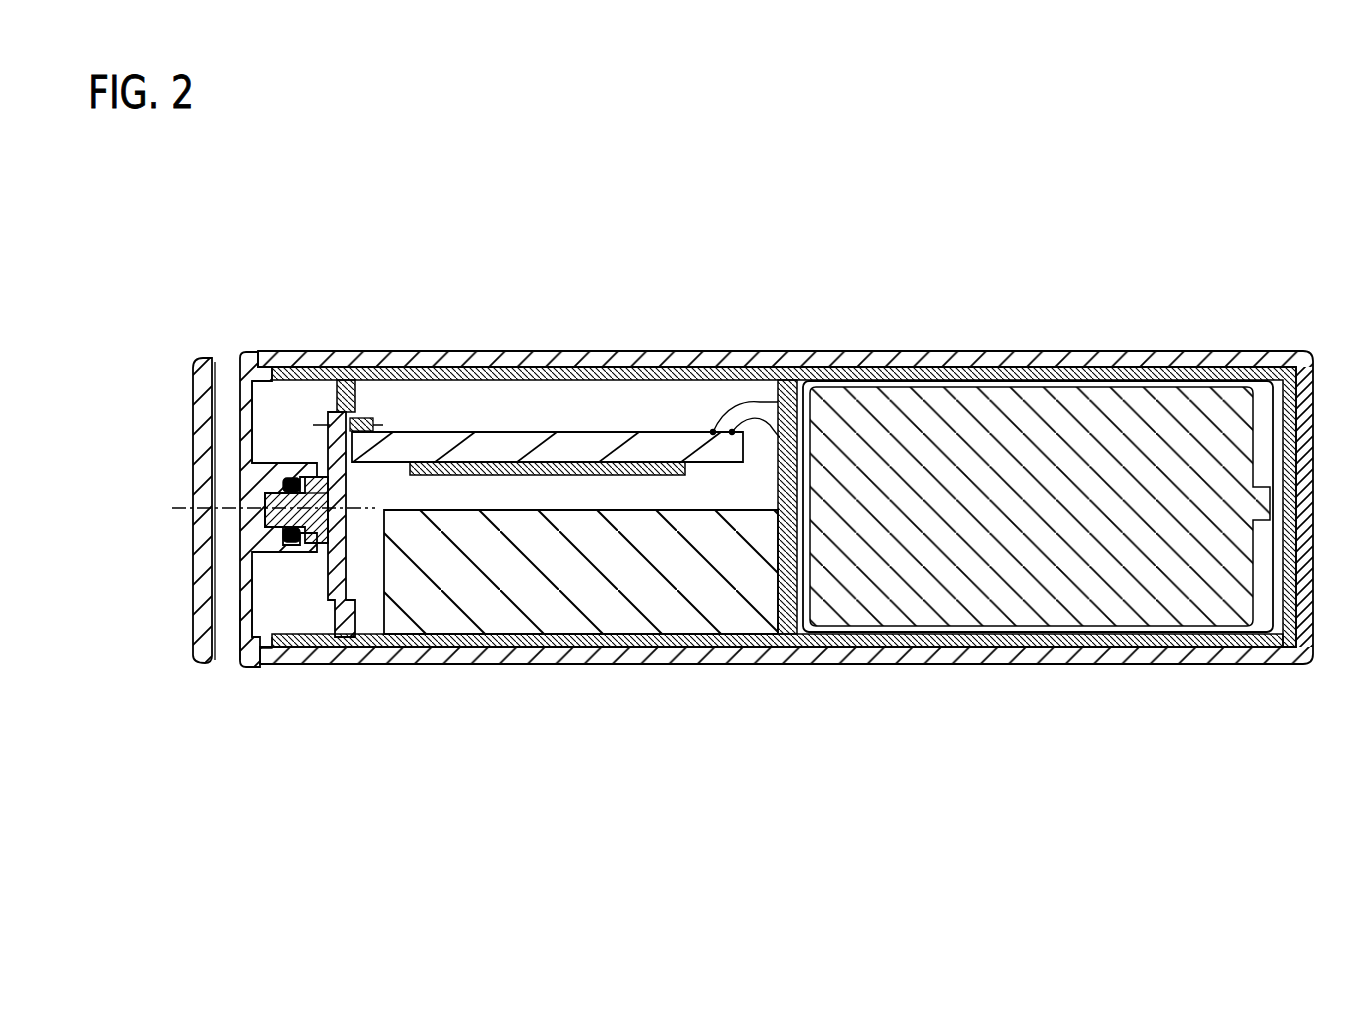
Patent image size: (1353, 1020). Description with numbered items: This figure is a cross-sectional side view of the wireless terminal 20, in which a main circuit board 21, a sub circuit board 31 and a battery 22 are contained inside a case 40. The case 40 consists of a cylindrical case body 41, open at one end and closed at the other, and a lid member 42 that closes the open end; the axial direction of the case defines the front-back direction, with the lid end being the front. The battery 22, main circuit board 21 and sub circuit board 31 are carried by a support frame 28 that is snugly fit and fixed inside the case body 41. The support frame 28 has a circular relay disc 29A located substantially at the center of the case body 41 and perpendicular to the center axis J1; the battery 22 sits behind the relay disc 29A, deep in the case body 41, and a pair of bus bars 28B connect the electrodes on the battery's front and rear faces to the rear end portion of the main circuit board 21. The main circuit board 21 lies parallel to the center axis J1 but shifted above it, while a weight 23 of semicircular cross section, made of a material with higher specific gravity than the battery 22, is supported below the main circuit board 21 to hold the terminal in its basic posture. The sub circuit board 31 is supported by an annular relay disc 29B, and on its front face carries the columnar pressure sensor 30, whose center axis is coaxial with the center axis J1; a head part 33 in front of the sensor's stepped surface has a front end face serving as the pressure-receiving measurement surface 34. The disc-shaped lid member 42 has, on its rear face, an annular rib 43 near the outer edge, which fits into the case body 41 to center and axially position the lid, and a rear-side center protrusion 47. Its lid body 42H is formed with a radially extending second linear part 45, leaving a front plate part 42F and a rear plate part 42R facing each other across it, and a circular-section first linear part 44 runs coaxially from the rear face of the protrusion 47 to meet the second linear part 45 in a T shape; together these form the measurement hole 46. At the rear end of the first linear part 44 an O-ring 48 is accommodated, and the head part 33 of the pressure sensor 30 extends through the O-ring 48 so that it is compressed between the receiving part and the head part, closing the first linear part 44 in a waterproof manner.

The wireless terminal 20 is at (701, 506).
The main circuit board 21 is at (430, 440).
The battery 22 is at (920, 610).
The weight 23 is at (730, 615).
The support frame 28 is at (635, 647).
The bus bars 28B is at (801, 600).
The relay disc 29A is at (804, 645).
The relay disc 29B is at (360, 383).
The pressure sensor 30 is at (352, 520).
The sub circuit board 31 is at (338, 535).
The head part 33 is at (270, 532).
The pressure-receiving measurement surface 34 is at (262, 512).
The case 40 is at (701, 506).
The case body 41 is at (785, 501).
The lid member 42 is at (206, 524).
The front plate part 42F is at (207, 650).
The rear plate part 42R is at (252, 660).
The lid body 42H is at (193, 623).
The annular rib 43 is at (275, 648).
The first linear part 44 is at (242, 492).
The second linear part 45 is at (233, 396).
The measurement hole 46 is at (204, 448).
The rear-side center protrusion 47 is at (322, 540).
The O-ring 48 is at (293, 535).
The center axis J1 is at (198, 509).